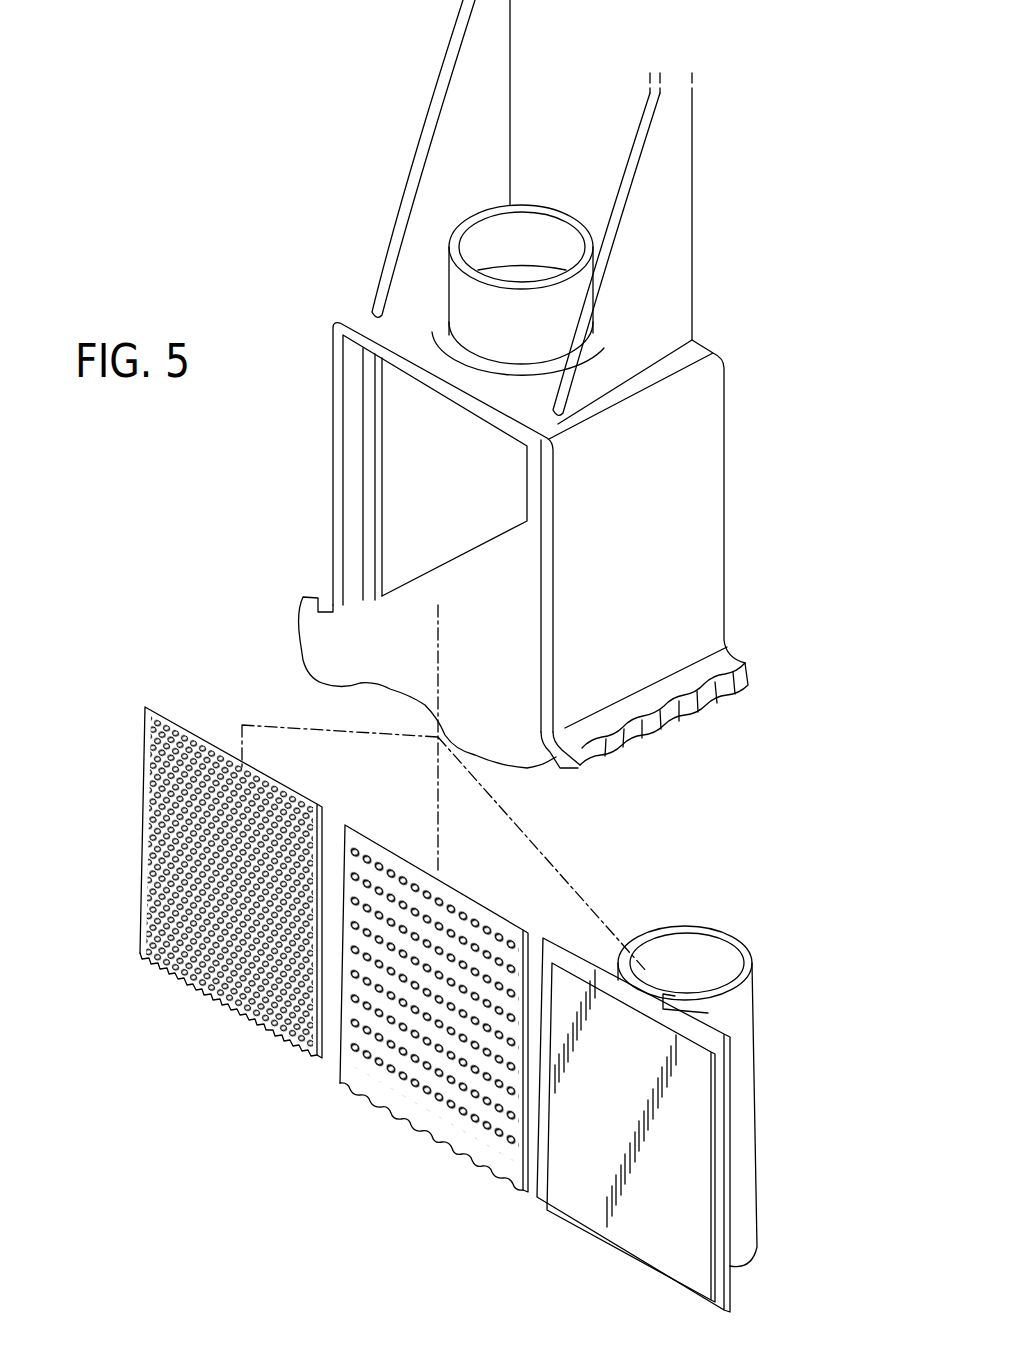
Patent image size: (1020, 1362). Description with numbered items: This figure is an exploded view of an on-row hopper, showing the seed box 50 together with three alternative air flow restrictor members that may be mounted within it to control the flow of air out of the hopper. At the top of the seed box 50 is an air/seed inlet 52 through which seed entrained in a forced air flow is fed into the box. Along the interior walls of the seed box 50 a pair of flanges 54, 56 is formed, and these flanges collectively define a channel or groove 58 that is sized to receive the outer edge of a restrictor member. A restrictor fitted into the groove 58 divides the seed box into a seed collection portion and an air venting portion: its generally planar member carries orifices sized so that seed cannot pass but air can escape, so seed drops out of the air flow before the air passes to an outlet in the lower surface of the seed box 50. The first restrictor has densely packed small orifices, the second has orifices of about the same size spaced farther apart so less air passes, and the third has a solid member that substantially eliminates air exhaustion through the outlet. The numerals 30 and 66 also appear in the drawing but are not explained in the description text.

The turbine blade assembly 30 is at (378, 160).
The seed box 50 is at (659, 474).
The air/seed inlet 52 is at (557, 235).
The flange 54 is at (368, 488).
The flange 56 is at (378, 548).
The channel or groove 58 is at (381, 460).
The cylindrical sleeve 66 is at (747, 1018).